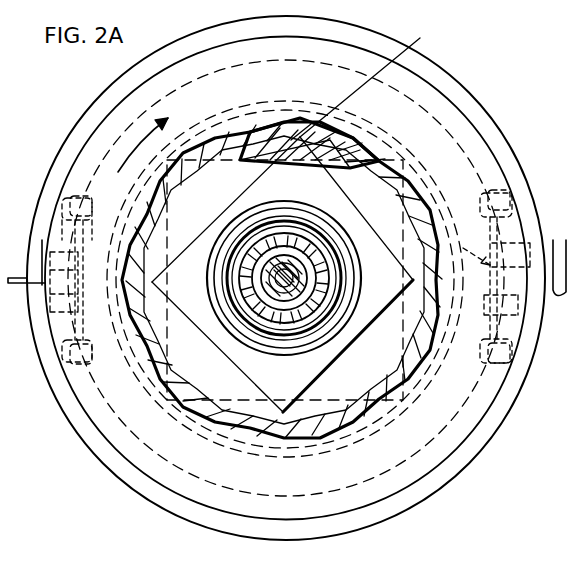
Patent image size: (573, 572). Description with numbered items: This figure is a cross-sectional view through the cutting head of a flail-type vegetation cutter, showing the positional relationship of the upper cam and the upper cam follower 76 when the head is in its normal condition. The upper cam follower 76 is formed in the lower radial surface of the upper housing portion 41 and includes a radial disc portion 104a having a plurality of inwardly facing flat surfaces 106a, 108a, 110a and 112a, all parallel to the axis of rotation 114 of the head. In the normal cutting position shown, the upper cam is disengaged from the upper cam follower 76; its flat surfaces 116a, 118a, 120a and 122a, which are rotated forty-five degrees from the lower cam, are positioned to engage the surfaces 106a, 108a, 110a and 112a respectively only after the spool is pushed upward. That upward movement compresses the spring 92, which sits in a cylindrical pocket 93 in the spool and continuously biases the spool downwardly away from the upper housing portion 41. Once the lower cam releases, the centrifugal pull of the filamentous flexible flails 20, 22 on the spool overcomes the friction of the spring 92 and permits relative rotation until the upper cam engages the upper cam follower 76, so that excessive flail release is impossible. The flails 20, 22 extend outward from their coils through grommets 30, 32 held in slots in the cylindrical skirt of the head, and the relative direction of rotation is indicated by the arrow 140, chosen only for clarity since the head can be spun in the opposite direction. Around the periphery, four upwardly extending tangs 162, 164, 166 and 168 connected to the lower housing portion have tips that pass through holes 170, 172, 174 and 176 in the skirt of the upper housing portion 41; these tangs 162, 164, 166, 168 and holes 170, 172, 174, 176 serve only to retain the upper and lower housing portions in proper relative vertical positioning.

The filamentous flexible flail 20 is at (18, 272).
The filamentous flexible flail 22 is at (559, 258).
The grommet 30 is at (40, 318).
The grommet 32 is at (543, 318).
The upper housing portion 41 is at (456, 87).
The upper cam follower 76 is at (375, 78).
The spring 92 is at (270, 212).
The cylindrical pocket 93 is at (248, 216).
The radial disc portion 104a is at (326, 133).
The inwardly facing flat surface 106a is at (335, 160).
The inwardly facing flat surface 108a is at (185, 225).
The inwardly facing flat surface 110a is at (210, 385).
The inwardly facing flat surface 112a is at (395, 342).
The axis of rotation 114 is at (295, 278).
The flat surface of upper cam 116a is at (330, 183).
The flat surface of upper cam 118a is at (253, 173).
The flat surface of upper cam 120a is at (233, 366).
The flat surface of upper cam 122a is at (333, 366).
The arrow 140 is at (137, 148).
The tang 162 is at (496, 367).
The tang 164 is at (503, 187).
The tang 166 is at (72, 385).
The tang 168 is at (70, 172).
The hole 170 is at (485, 375).
The hole 172 is at (491, 193).
The hole 174 is at (83, 193).
The hole 176 is at (78, 400).